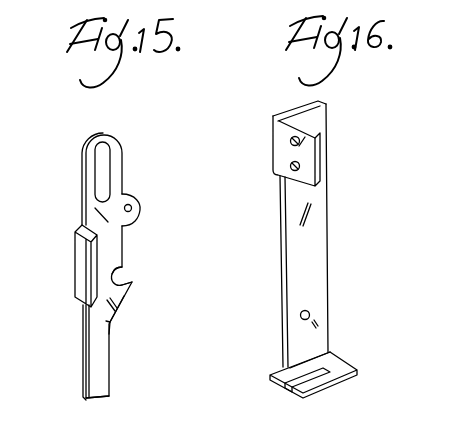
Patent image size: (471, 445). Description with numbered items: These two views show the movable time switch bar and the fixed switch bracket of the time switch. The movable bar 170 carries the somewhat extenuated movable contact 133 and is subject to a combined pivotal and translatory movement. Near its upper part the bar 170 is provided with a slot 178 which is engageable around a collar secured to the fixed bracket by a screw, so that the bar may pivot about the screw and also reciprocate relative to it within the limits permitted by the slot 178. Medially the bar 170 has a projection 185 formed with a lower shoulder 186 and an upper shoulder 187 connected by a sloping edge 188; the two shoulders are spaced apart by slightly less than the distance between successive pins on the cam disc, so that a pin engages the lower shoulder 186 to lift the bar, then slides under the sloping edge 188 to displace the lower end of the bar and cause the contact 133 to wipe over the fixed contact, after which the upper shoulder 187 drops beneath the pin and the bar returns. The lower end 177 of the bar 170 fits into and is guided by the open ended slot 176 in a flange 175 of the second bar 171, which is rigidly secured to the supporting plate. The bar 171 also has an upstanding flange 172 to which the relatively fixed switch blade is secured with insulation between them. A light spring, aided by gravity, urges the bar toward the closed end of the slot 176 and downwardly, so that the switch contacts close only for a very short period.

In FIG. 15, the bar 170 is at (113, 246).
In FIG. 15, the slot 178 is at (106, 164).
In FIG. 15, the movable contact 133 is at (75, 285).
In FIG. 15, the upper shoulder 187 is at (125, 266).
In FIG. 15, the sloping edge 188 is at (132, 290).
In FIG. 15, the projection 185 is at (122, 303).
In FIG. 15, the lower shoulder 186 is at (110, 327).
In FIG. 15, the end 177 is at (100, 397).
In FIG. 16, the second bar 171 is at (320, 222).
In FIG. 16, the upstanding flange 172 is at (297, 160).
In FIG. 16, the flange 175 is at (317, 385).
In FIG. 16, the open ended slot 176 is at (285, 385).